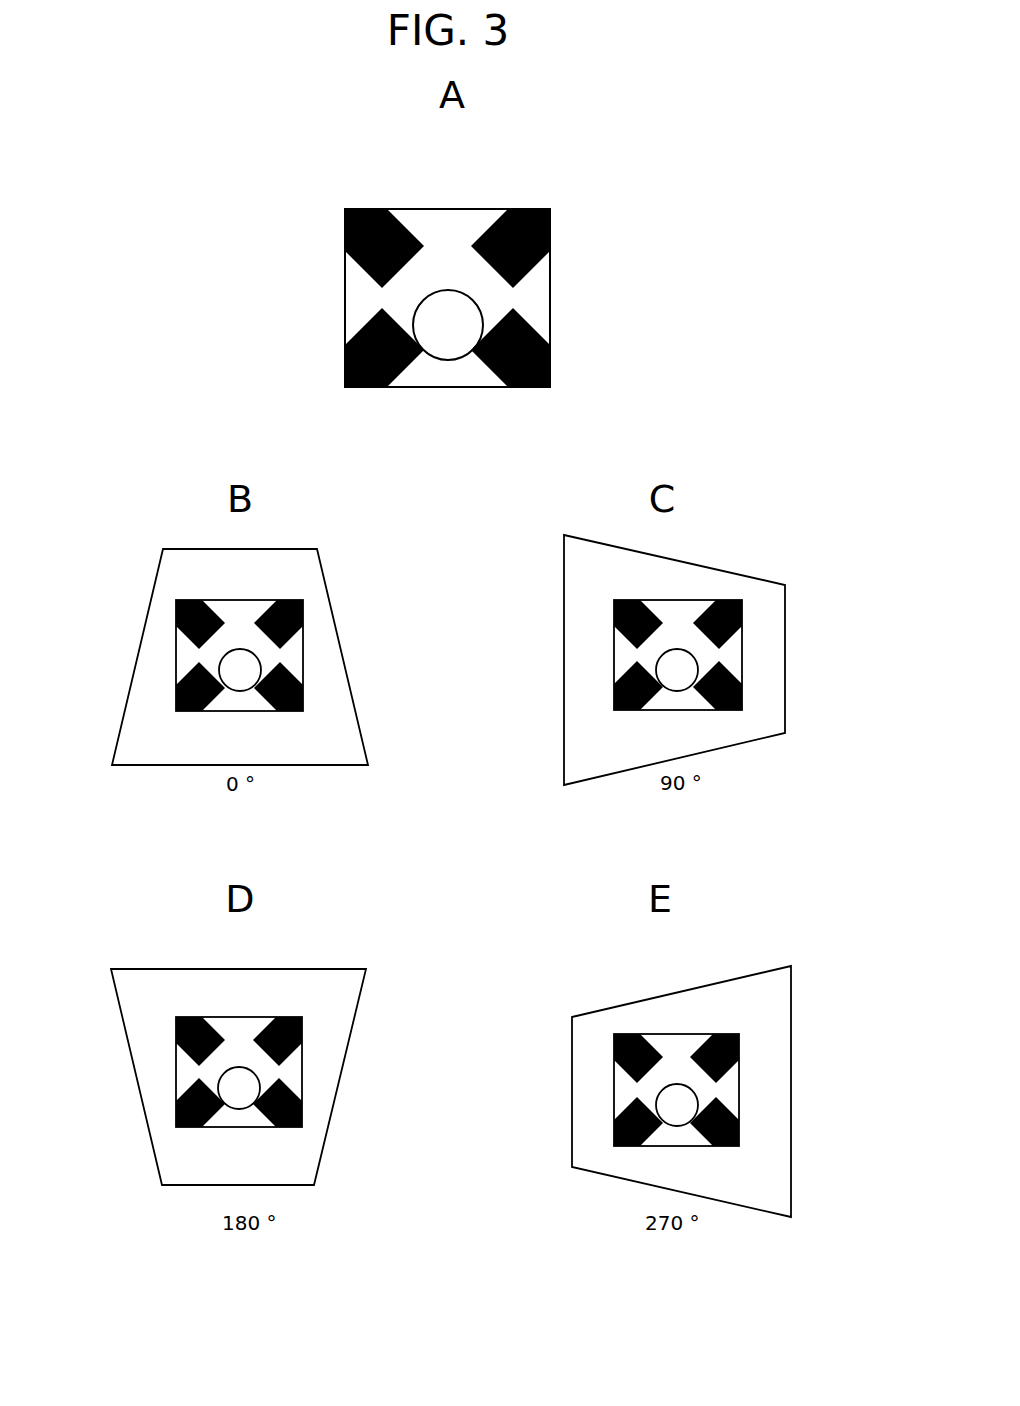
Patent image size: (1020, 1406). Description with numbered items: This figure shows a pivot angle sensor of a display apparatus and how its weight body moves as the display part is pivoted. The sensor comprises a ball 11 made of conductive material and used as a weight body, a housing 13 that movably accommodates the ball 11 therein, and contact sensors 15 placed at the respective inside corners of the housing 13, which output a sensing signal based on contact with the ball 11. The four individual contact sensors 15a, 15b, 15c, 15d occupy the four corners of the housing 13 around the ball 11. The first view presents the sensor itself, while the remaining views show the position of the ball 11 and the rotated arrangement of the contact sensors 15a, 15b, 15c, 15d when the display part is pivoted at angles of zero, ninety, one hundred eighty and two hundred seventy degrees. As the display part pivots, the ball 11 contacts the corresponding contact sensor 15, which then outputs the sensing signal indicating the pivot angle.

The ball 11 is at (484, 312).
The housing 13 is at (447, 209).
The contact sensors 15 is at (517, 209).
The contact sensor 15a is at (360, 257).
The contact sensor 15b is at (503, 382).
The contact sensor 15c is at (397, 382).
The contact sensor 15d is at (550, 250).